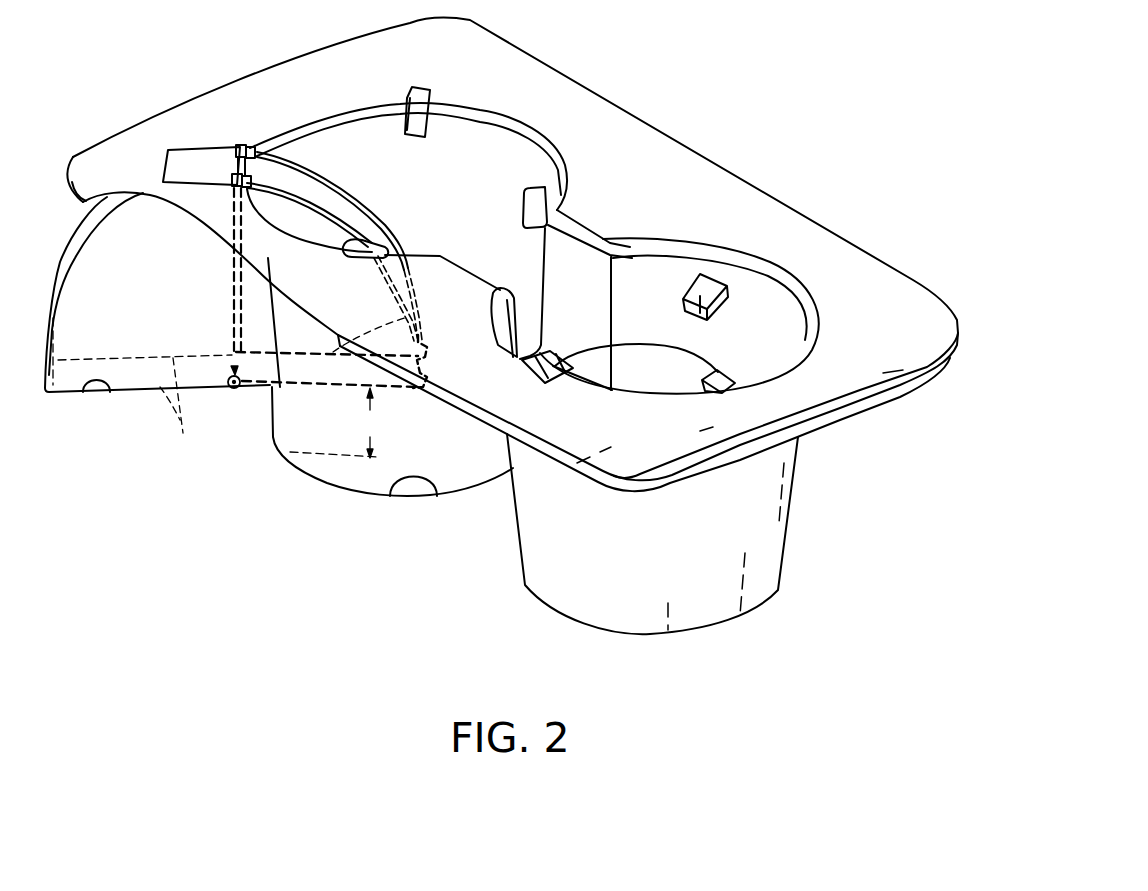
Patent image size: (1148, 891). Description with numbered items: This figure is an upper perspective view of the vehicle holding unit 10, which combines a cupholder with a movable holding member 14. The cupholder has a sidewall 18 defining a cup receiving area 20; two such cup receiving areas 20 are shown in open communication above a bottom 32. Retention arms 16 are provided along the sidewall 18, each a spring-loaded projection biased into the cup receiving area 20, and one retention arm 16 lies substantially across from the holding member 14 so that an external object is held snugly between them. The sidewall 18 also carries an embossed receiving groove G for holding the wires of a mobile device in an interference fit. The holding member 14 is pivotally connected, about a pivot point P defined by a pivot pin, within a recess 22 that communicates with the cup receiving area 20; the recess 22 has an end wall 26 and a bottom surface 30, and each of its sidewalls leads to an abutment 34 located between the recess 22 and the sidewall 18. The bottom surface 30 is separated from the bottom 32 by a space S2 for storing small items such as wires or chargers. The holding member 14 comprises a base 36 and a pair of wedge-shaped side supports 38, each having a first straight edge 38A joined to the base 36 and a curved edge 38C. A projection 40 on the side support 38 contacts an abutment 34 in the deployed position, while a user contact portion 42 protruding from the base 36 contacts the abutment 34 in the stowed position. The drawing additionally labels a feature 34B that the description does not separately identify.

The vehicle holding unit 10 is at (757, 68).
The holding member 14 is at (341, 183).
The retention arm 16 is at (537, 207).
The sidewall 18 is at (530, 140).
The cup receiving area 20 is at (487, 170).
The recess 22 is at (191, 327).
The end wall 26 is at (175, 167).
The bottom surface 30 is at (88, 393).
The bottom 32 is at (433, 499).
The abutment 34 is at (251, 147).
The strap hidden portion 34B is at (230, 292).
The base 36 is at (410, 322).
The side support 38 is at (375, 232).
The first straight edge 38A is at (313, 388).
The curved edge 38C is at (318, 165).
The projection 40 is at (240, 145).
The user contact portion 42 is at (420, 377).
The receiving groove G is at (425, 124).
The pivot point P is at (236, 390).
The space S2 is at (368, 423).